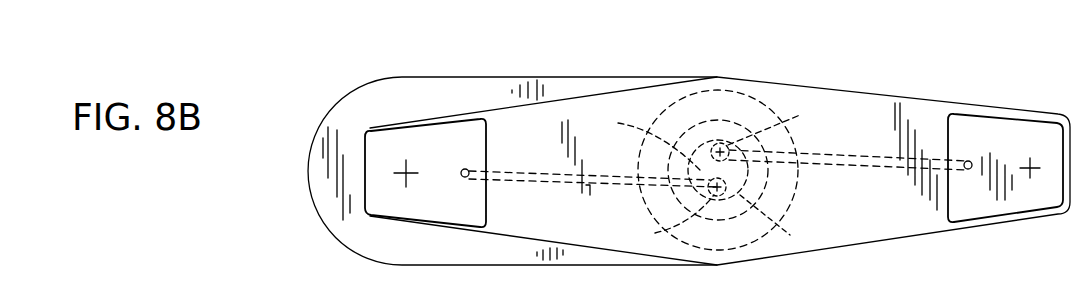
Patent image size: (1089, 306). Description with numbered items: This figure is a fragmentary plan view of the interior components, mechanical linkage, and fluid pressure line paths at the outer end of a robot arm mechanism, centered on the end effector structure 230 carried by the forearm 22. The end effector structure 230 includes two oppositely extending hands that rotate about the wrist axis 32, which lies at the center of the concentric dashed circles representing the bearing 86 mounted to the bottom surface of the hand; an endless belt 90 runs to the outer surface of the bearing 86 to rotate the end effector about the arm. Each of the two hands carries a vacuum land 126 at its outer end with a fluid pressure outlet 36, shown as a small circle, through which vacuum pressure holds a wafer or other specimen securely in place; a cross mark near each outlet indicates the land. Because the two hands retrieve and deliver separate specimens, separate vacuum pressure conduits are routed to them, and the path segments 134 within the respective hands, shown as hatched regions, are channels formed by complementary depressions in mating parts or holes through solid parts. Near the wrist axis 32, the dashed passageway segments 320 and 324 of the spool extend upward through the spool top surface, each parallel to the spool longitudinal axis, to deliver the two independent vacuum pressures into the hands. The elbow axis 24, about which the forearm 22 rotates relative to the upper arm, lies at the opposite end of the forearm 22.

The forearm 22 is at (318, 173).
The elbow axis 24 is at (404, 176).
The wrist axis 32 is at (659, 141).
The fluid pressure outlet 36 is at (983, 133).
The bearing 86 is at (790, 182).
The endless belt 90 is at (795, 218).
The vacuum land 126 is at (1040, 222).
The path segment 134 is at (892, 170).
The end effector structure 230 is at (925, 87).
The passageway segment 320 is at (597, 209).
The passageway segment 324 is at (800, 113).